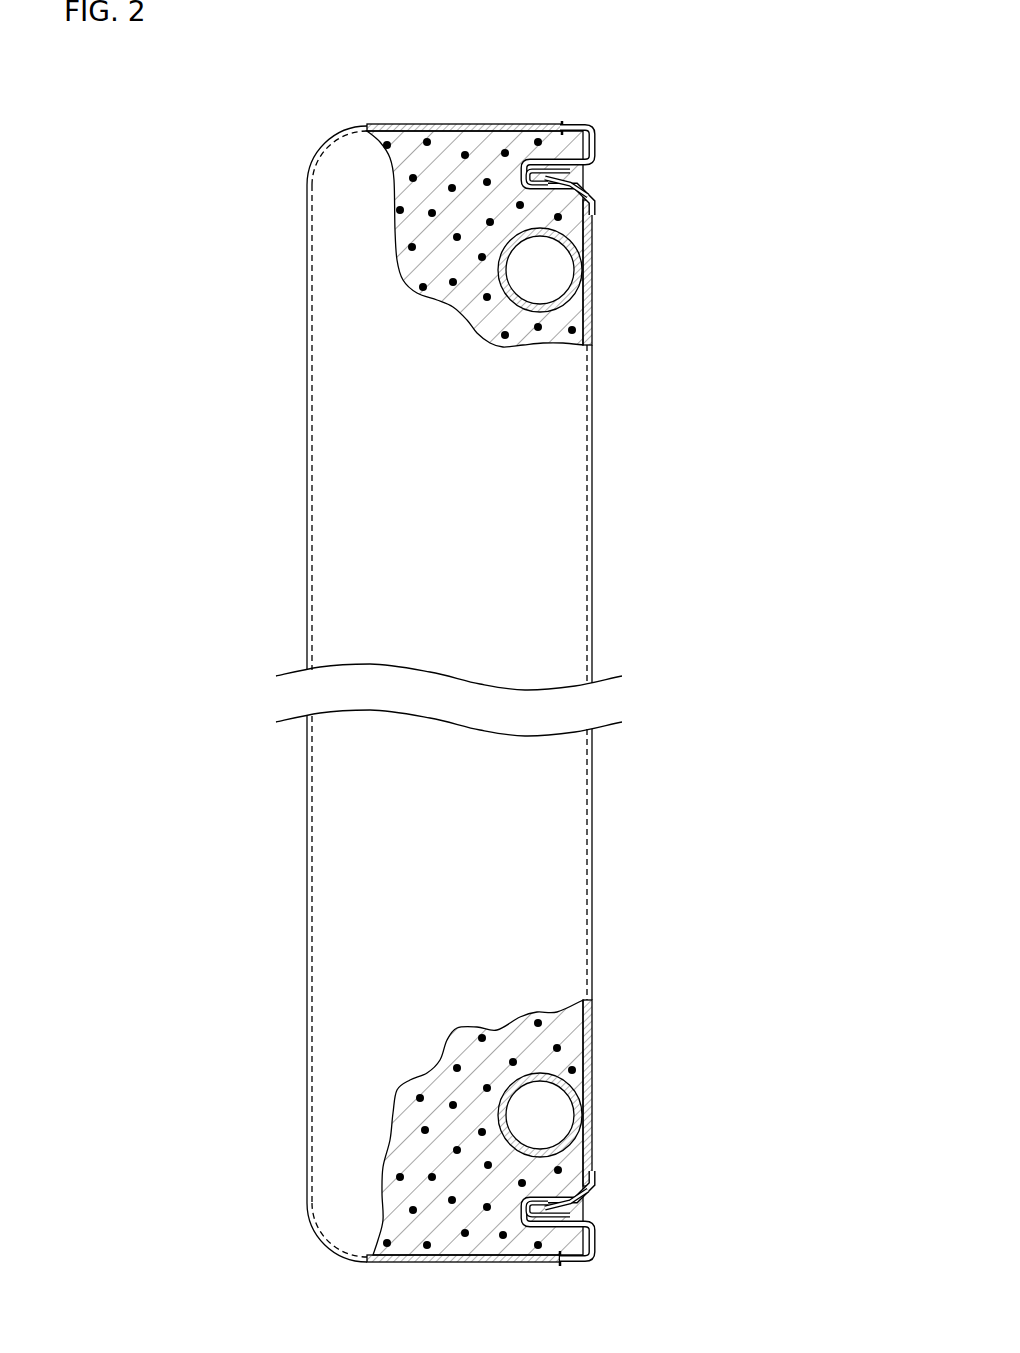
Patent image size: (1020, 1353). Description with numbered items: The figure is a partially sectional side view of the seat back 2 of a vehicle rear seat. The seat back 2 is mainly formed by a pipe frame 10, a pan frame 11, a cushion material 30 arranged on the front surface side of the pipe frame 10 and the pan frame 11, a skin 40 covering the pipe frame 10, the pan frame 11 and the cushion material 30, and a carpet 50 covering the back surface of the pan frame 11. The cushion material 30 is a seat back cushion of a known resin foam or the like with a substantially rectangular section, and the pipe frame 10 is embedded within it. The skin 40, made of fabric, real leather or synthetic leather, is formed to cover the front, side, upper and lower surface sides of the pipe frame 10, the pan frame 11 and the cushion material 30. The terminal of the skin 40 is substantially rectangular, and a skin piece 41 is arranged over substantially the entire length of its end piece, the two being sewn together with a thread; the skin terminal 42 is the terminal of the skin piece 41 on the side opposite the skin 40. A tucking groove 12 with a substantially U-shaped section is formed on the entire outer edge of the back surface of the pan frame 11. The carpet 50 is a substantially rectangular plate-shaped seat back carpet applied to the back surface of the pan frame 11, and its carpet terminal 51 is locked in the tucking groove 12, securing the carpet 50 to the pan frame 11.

The seat back 2 is at (206, 106).
The pipe frame 10 is at (503, 247).
The pan frame 11 is at (585, 322).
The tucking groove 12 is at (652, 184).
The cushion material 30 is at (445, 285).
The skin 40 is at (512, 128).
The skin piece 41 is at (593, 140).
The skin terminal 42 is at (592, 170).
The carpet 50 is at (590, 595).
The carpet terminal 51 is at (598, 190).